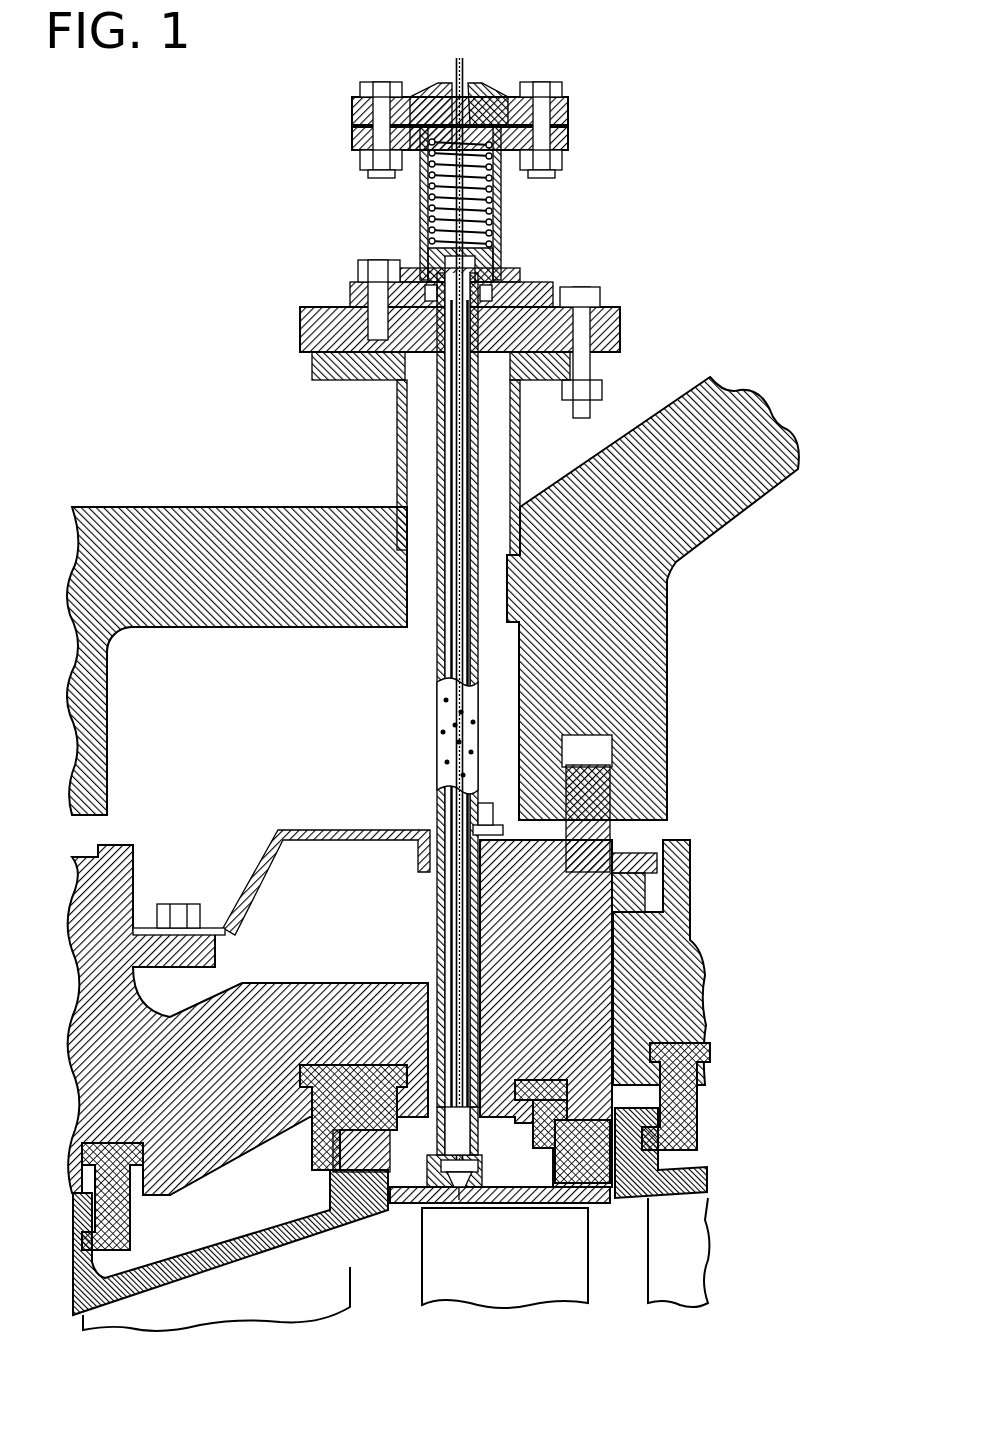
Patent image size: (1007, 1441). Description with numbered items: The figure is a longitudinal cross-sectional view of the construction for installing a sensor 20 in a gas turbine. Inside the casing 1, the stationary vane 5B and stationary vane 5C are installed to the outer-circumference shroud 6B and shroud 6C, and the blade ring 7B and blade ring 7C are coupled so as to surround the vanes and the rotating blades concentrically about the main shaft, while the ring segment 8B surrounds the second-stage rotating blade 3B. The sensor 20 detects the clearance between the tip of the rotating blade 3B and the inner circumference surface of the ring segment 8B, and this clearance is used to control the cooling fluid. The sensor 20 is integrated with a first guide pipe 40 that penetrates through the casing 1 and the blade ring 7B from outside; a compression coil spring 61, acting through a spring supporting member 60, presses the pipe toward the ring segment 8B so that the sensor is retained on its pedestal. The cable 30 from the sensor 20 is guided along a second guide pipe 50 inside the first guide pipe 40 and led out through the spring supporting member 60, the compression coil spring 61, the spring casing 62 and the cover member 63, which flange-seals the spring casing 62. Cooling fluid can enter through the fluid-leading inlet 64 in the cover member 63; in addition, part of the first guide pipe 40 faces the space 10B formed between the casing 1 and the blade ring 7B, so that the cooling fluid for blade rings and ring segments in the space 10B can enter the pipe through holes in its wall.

The casing 1 is at (212, 505).
The space 10B is at (268, 655).
The sensor 20 is at (459, 1203).
The cable 30 is at (477, 1117).
The first guide pipe 40 is at (436, 908).
The second guide pipe 50 is at (450, 945).
The spring supporting member 60 is at (500, 262).
The compression coil spring 61 is at (500, 211).
The spring casing 62 is at (426, 232).
The cover member 63 is at (568, 112).
The fluid-leading inlet 64 is at (480, 108).
The rotating blade 3B is at (420, 1296).
The stationary vane 5B is at (245, 1298).
The stationary vane 5C is at (700, 1288).
The shroud 6B is at (167, 1284).
The shroud 6C is at (637, 1202).
The blade ring 7B is at (330, 985).
The blade ring 7C is at (690, 1000).
The ring segment 8B is at (388, 1205).